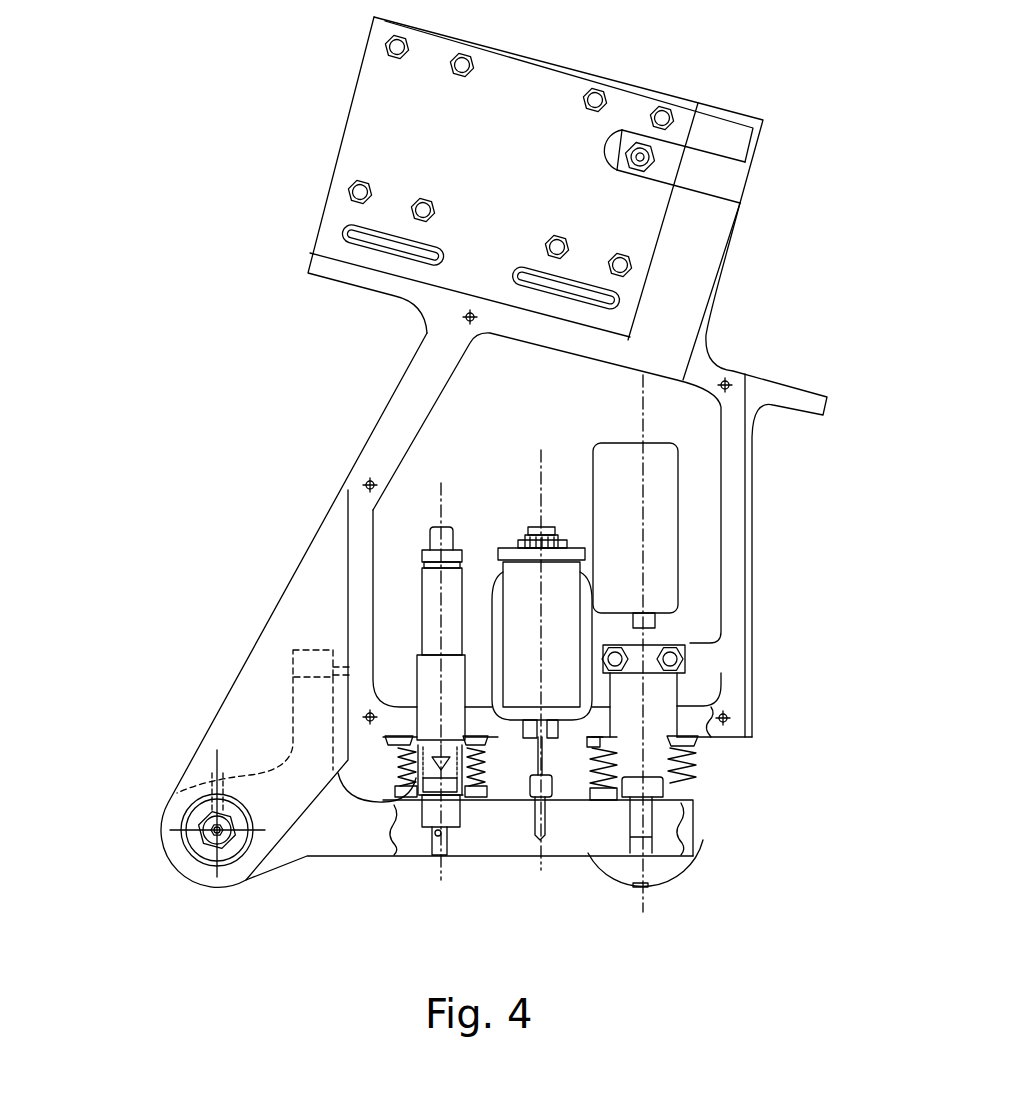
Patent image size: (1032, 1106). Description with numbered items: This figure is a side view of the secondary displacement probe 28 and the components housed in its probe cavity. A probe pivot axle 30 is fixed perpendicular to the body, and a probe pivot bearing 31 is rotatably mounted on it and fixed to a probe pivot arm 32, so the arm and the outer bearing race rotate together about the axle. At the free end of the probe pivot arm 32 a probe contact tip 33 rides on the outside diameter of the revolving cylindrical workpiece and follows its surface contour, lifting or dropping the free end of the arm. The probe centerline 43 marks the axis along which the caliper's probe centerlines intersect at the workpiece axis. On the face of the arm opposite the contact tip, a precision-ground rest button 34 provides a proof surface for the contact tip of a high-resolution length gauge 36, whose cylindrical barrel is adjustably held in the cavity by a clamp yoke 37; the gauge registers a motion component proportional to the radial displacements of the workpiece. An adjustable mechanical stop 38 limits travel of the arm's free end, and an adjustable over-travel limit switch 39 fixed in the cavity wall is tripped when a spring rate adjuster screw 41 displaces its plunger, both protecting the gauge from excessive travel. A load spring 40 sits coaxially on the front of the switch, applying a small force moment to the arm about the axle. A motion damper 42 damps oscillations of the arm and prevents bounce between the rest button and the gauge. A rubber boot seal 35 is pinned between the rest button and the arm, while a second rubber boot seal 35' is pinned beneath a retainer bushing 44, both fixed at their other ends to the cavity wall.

The secondary displacement probe 28 is at (297, 427).
The probe pivot axle 30 is at (152, 850).
The probe pivot bearing 31 is at (200, 862).
The probe pivot arm 32 is at (695, 820).
The probe contact tip 33 is at (647, 888).
The rest button 34 is at (665, 787).
The rubber boot seal 35 is at (712, 765).
The second rubber boot seal 35' is at (476, 820).
The high-resolution length gauge 36 is at (690, 522).
The clamp yoke 37 is at (688, 660).
The adjustable mechanical stop 38 is at (288, 662).
The adjustable over-travel limit switch 39 is at (413, 652).
The load spring 40 is at (417, 780).
The spring rate adjuster screw 41 is at (432, 857).
The motion damper 42 is at (500, 588).
The probe centerline 43 is at (650, 410).
The retainer bushing 44 is at (458, 832).